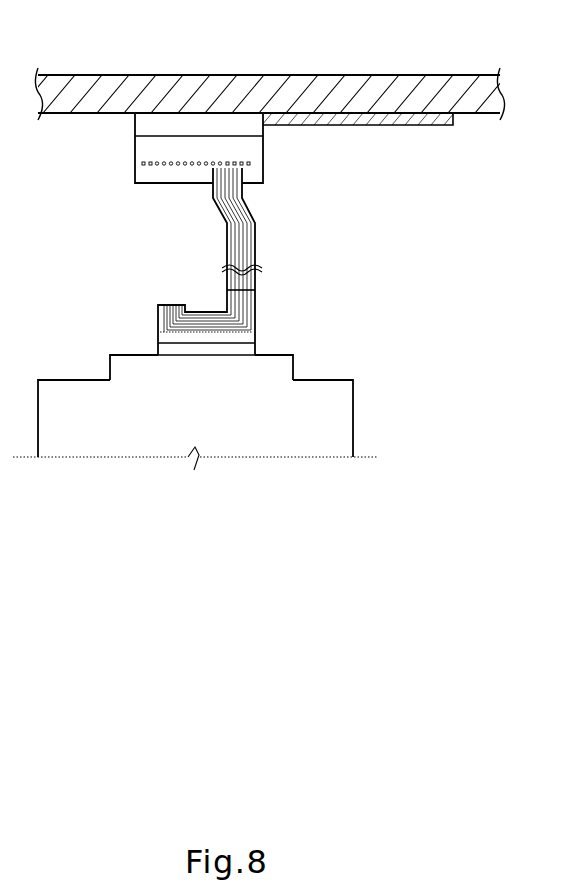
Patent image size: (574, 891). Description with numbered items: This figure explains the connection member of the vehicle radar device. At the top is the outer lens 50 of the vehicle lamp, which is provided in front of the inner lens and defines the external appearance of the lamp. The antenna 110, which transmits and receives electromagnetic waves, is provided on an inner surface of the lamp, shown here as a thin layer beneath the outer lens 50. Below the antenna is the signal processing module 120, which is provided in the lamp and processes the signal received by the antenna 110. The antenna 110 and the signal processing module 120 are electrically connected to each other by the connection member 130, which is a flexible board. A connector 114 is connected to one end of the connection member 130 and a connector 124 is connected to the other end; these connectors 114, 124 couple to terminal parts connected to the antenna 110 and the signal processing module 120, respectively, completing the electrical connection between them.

The outer lens 50 is at (470, 93).
The antenna 110 is at (355, 118).
The connector 114 is at (223, 127).
The connection member 130 is at (253, 247).
The connector 124 is at (293, 368).
The signal processing module 120 is at (352, 418).